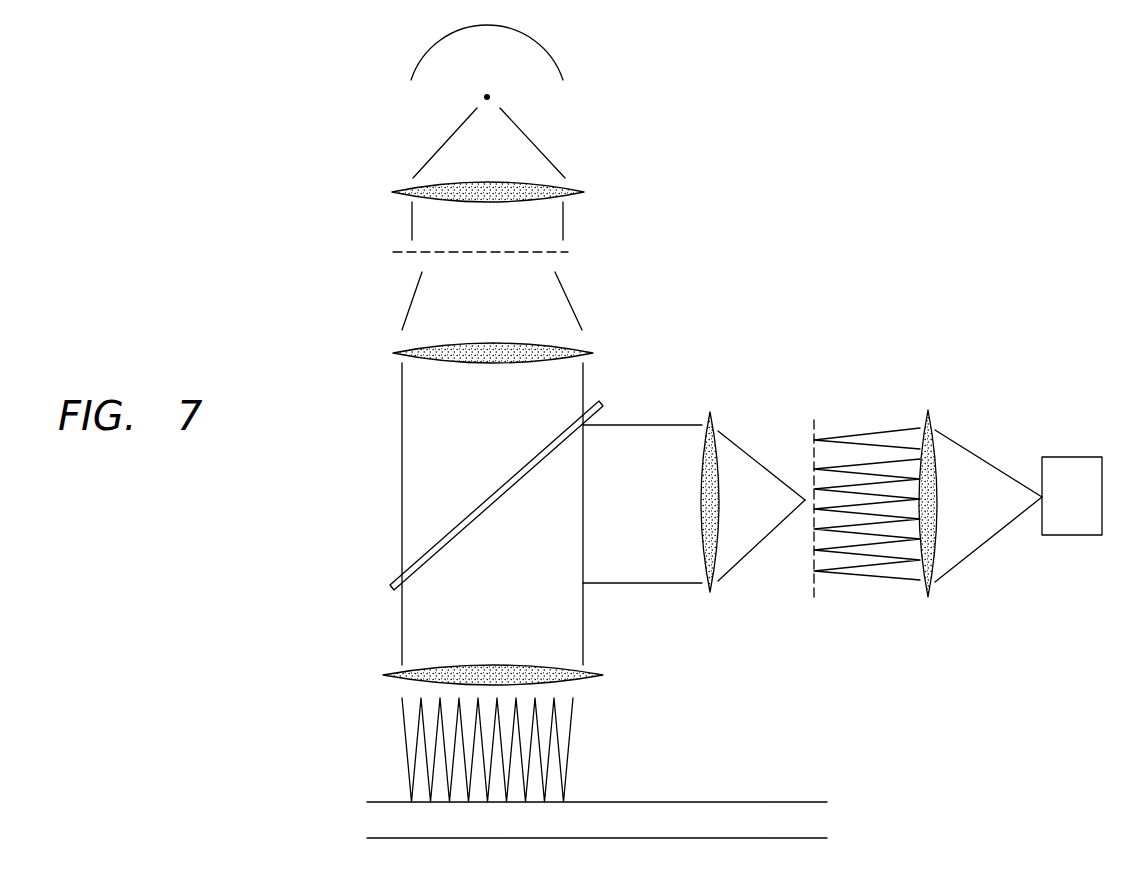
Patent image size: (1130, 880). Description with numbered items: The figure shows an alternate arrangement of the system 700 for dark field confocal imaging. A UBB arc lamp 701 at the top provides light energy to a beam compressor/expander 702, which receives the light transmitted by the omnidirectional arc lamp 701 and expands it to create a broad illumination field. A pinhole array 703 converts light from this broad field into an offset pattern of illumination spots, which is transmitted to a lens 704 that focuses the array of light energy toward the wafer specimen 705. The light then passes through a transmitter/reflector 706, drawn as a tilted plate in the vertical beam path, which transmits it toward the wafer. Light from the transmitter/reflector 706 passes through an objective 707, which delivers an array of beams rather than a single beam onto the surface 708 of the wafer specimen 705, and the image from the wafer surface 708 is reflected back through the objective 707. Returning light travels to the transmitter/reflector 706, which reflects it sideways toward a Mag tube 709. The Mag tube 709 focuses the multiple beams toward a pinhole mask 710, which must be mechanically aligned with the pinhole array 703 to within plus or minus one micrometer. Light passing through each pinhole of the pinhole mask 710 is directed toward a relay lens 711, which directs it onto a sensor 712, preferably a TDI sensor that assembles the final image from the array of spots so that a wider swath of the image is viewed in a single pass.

The optical inspection system 700 is at (782, 287).
The UBB arc lamp 701 is at (556, 58).
The beam compressor/expander 702 is at (582, 191).
The pinhole array 703 is at (570, 252).
The lens 704 is at (590, 352).
The wafer specimen 705 is at (815, 819).
The transmitter/reflector 706 is at (522, 459).
The objective 707 is at (603, 675).
The surface of the wafer specimen 708 is at (661, 799).
The Mag tube 709 is at (710, 597).
The pinhole mask 710 is at (814, 600).
The relay lens 711 is at (928, 598).
The sensor 712 is at (1070, 535).